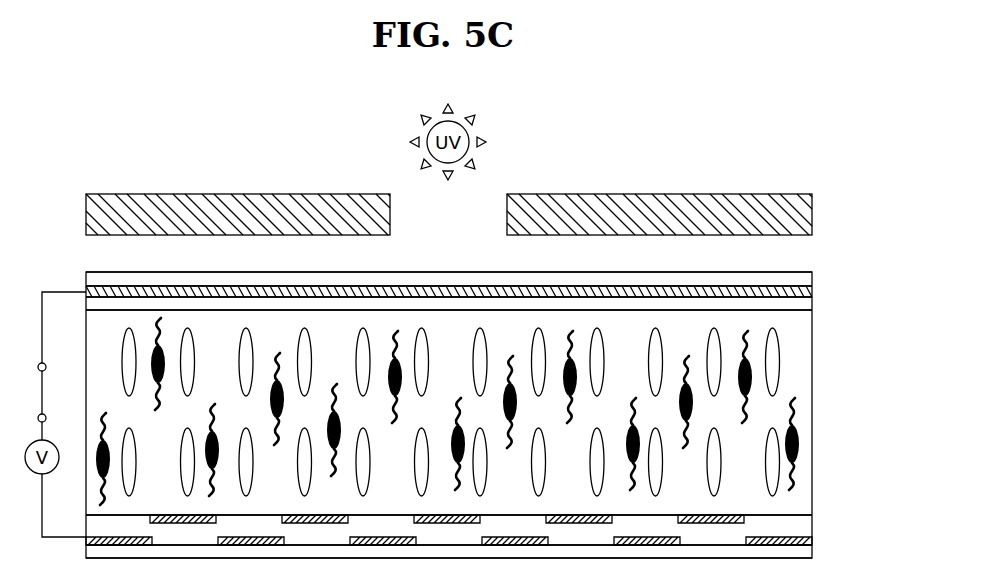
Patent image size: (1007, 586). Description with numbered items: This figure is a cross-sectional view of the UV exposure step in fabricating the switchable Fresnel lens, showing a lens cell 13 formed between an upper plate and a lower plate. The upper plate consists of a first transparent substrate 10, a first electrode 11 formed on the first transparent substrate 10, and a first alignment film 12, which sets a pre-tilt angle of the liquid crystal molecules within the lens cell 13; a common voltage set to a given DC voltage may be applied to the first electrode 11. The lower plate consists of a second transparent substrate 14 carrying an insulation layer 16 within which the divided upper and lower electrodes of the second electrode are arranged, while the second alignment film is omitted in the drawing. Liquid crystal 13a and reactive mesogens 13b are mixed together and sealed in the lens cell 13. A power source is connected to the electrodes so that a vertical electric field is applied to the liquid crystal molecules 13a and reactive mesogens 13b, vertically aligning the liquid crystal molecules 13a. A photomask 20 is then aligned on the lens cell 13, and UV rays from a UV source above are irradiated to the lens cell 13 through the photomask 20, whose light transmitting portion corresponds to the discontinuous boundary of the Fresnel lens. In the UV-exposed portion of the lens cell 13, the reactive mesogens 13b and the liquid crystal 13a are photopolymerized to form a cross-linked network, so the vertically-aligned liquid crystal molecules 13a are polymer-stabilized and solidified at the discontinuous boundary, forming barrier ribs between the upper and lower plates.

The photomask 20 is at (805, 213).
The first transparent substrate 10 is at (805, 277).
The first electrode 11 is at (805, 291).
The first alignment film 12 is at (805, 305).
The lens cell 13 is at (805, 398).
The liquid crystal molecules 13a is at (777, 360).
The reactive mesogens 13b is at (799, 447).
The insulation layer 16 is at (805, 523).
The second transparent substrate 14 is at (805, 551).